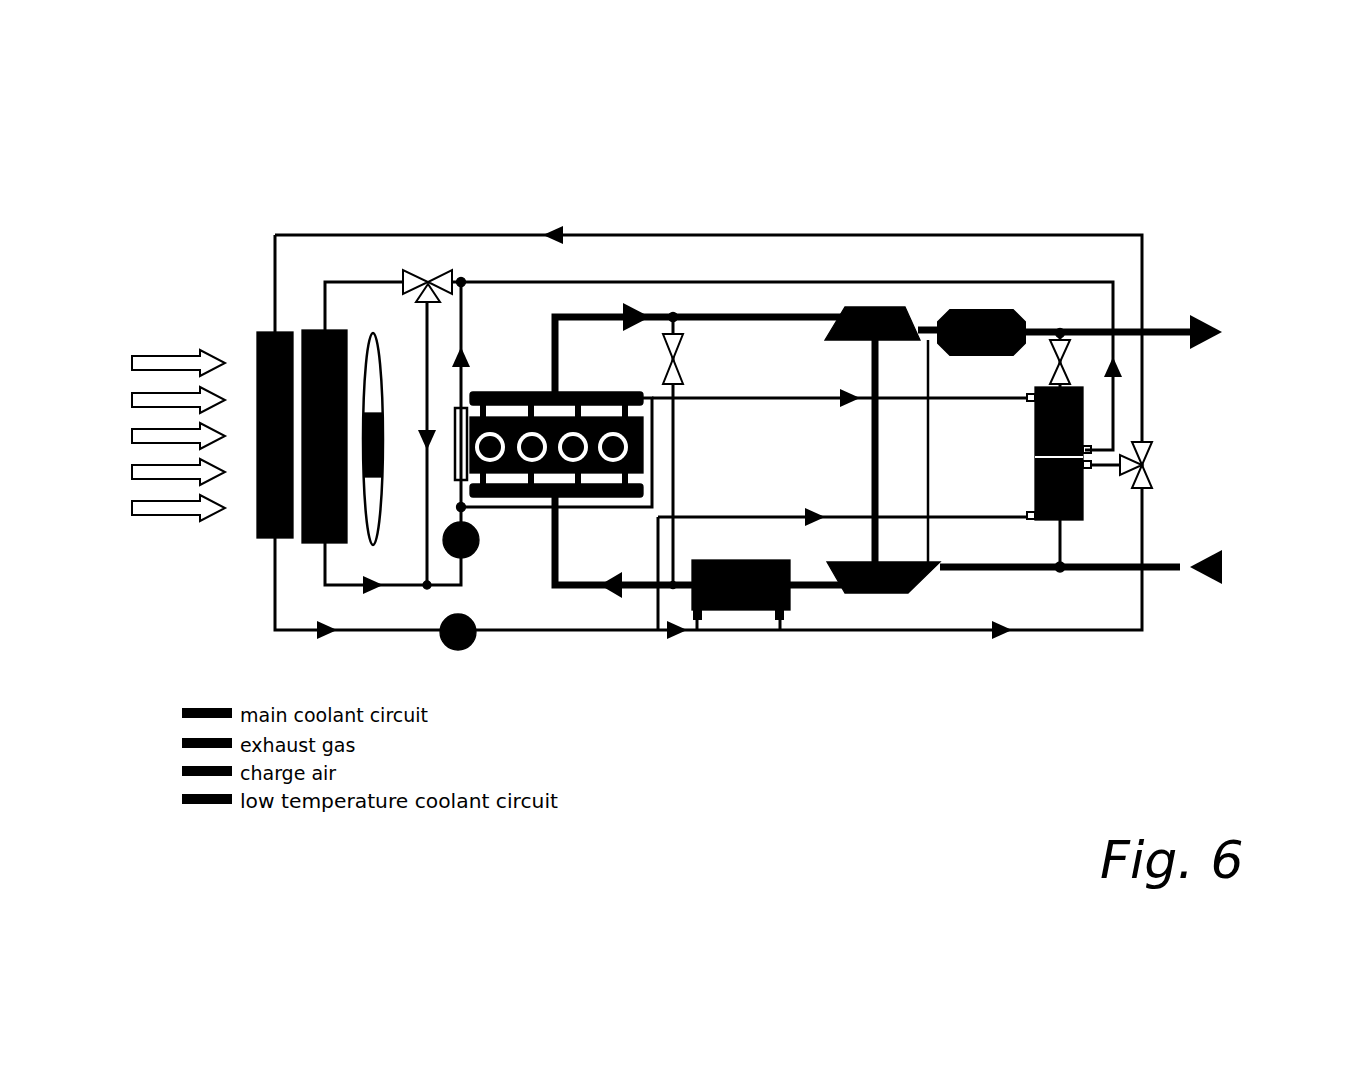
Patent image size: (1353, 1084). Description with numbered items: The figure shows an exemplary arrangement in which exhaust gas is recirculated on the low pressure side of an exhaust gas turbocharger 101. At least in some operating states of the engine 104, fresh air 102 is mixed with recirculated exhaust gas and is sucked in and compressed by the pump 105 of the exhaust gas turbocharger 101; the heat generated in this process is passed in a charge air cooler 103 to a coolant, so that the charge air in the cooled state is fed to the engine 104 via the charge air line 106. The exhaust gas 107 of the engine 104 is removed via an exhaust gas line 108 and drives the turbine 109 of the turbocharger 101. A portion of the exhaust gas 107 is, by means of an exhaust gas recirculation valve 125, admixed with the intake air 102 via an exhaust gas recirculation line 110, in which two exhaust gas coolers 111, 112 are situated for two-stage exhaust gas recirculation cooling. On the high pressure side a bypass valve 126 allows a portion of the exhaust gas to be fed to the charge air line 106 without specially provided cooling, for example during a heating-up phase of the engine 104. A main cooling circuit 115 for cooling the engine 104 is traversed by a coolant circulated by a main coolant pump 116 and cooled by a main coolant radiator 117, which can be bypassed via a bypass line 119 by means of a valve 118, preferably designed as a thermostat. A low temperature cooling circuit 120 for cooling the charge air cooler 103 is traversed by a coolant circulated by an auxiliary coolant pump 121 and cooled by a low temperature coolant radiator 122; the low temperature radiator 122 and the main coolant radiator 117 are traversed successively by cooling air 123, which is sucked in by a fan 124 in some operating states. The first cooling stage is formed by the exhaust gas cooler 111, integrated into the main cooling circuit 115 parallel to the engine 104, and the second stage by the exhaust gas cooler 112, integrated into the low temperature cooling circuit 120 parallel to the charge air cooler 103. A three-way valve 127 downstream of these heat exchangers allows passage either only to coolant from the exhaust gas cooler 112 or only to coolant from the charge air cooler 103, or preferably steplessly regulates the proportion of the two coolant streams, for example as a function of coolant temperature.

The exhaust gas turbocharger 101 is at (928, 452).
The fresh air 102 is at (1135, 570).
The charge air cooler 103 is at (713, 610).
The engine 104 is at (515, 392).
The pump 105 is at (873, 593).
The charge air line 106 is at (567, 590).
The exhaust gas 107 is at (1169, 332).
The exhaust gas line 108 is at (738, 313).
The turbine 109 is at (898, 307).
The exhaust gas recirculation line 110 is at (1065, 547).
The exhaust gas cooler 111 is at (1083, 440).
The exhaust gas cooler 112 is at (1120, 440).
The main cooling circuit 115 is at (363, 288).
The main coolant pump 116 is at (472, 558).
The main coolant radiator 117 is at (303, 330).
The valve 118 is at (412, 273).
The bypass line 119 is at (427, 522).
The low temperature cooling circuit 120 is at (307, 630).
The auxiliary coolant pump 121 is at (443, 650).
The low temperature coolant radiator 122 is at (258, 347).
The cooling air 123 is at (145, 435).
The fan 124 is at (363, 360).
The exhaust gas recirculation valve 125 is at (1053, 330).
The bypass valve 126 is at (676, 333).
The three-way valve 127 is at (1080, 498).